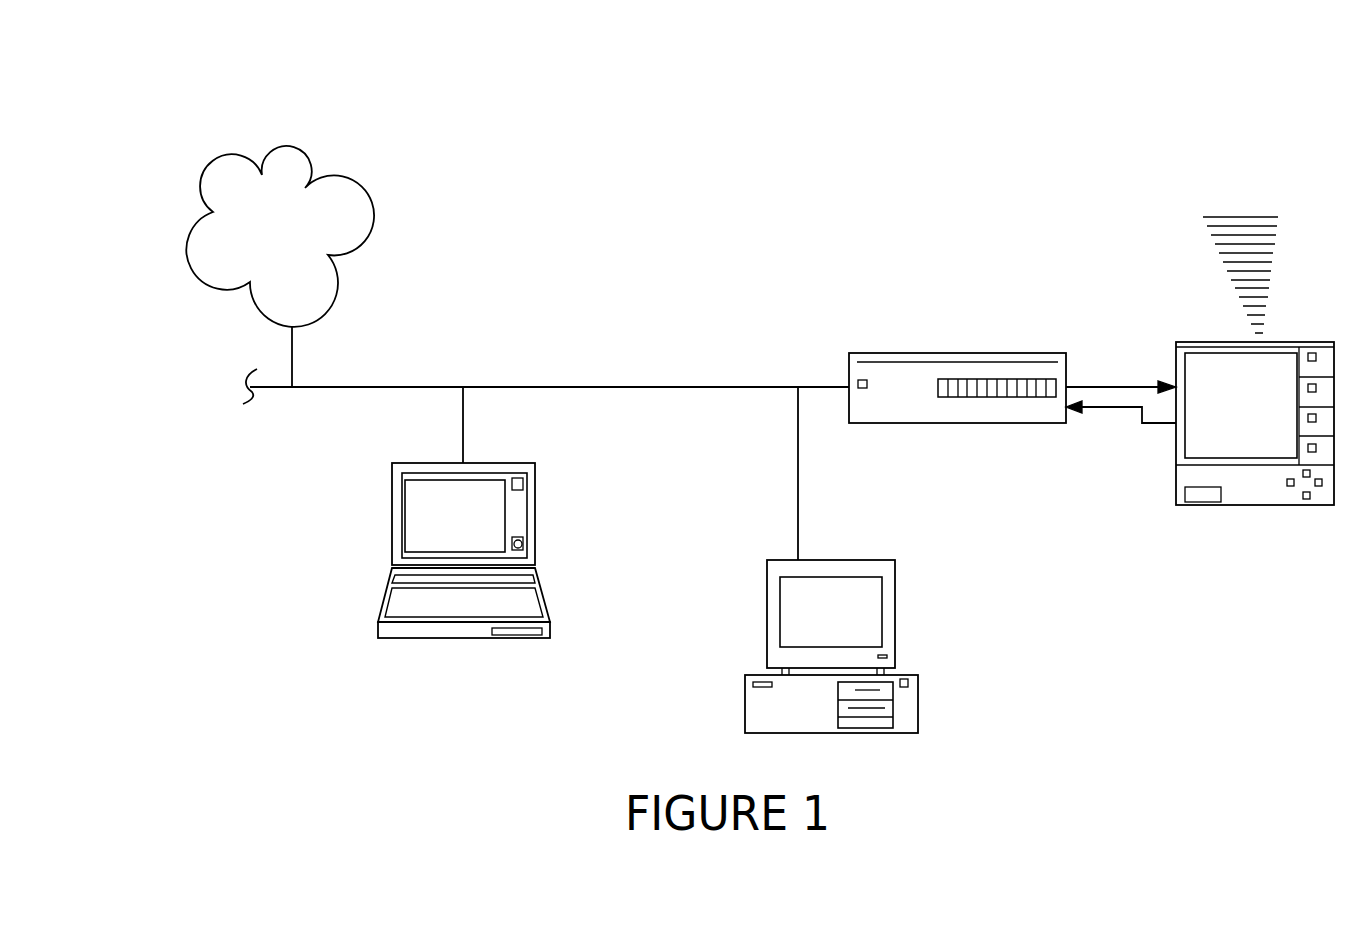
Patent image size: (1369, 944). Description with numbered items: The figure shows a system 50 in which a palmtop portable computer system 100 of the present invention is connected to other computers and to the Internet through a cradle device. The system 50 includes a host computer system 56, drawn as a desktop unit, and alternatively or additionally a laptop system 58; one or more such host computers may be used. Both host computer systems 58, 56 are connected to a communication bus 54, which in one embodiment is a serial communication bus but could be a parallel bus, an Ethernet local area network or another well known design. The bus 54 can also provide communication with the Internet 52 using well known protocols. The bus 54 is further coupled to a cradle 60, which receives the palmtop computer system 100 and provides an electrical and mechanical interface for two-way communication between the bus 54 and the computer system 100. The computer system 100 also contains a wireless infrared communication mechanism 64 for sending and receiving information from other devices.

The system 50 is at (166, 50).
The Internet 52 is at (353, 190).
The communication bus 54 is at (565, 387).
The host computer system 56 is at (897, 587).
The laptop system 58 is at (505, 463).
The cradle 60 is at (985, 353).
The wireless infrared communication mechanism 64 is at (1203, 258).
The palmtop portable computer system 100 is at (1297, 342).